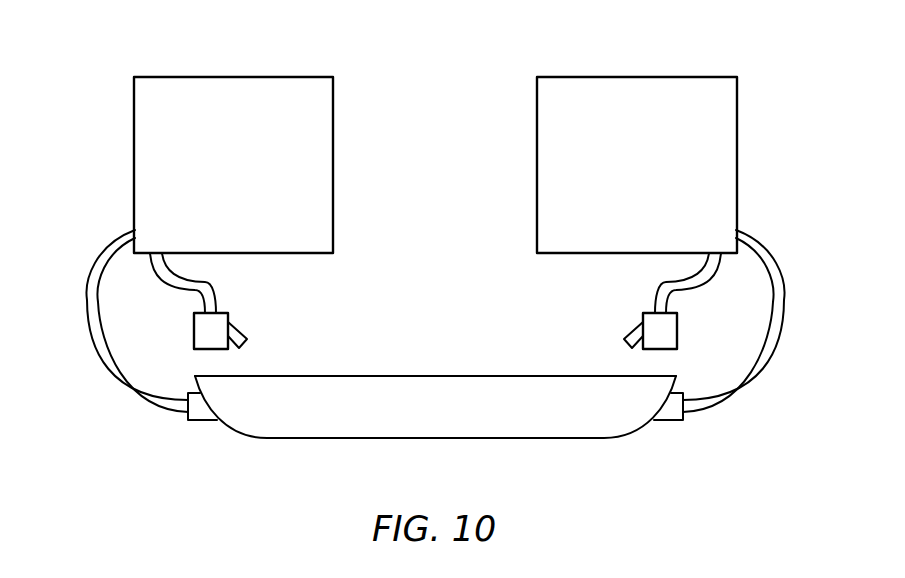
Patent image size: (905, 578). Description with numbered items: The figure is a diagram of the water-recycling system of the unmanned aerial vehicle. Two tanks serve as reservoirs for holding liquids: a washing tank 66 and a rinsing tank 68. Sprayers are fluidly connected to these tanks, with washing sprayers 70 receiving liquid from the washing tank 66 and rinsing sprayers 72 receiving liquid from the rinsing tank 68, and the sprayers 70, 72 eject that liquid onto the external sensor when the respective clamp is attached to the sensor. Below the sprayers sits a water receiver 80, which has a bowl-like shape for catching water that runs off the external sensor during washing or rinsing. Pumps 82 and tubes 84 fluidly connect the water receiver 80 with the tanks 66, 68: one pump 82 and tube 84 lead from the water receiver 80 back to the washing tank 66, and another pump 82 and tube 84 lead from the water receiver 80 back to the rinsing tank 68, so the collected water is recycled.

The washing tank 66 is at (183, 77).
The rinsing tank 68 is at (688, 77).
The washing sprayer 70 is at (241, 321).
The rinsing sprayer 72 is at (630, 321).
The water receiver 80 is at (580, 438).
The pump 82 is at (203, 421).
The tube 84 is at (87, 327).